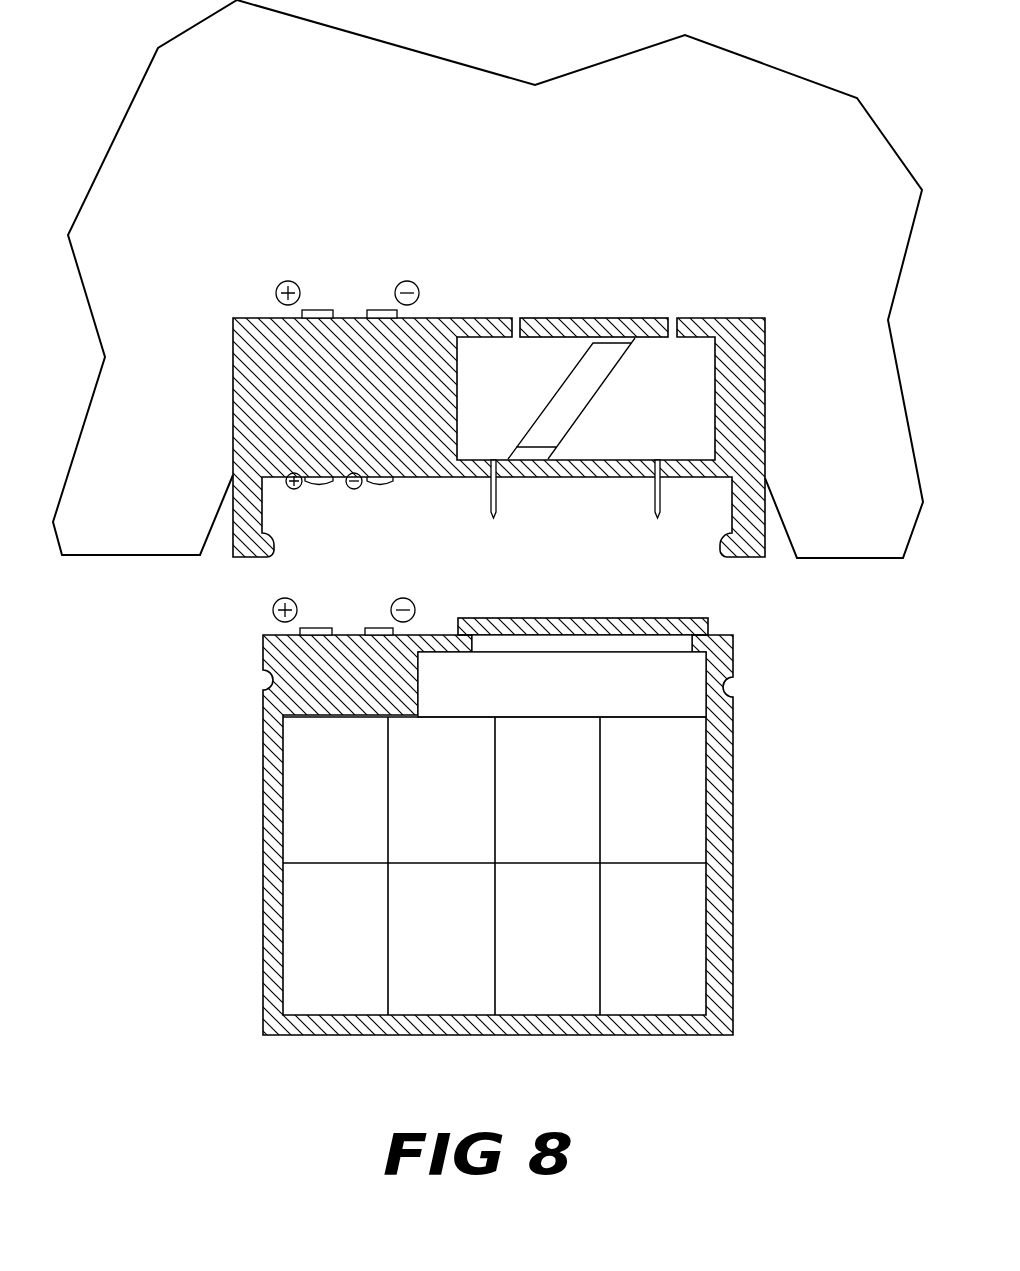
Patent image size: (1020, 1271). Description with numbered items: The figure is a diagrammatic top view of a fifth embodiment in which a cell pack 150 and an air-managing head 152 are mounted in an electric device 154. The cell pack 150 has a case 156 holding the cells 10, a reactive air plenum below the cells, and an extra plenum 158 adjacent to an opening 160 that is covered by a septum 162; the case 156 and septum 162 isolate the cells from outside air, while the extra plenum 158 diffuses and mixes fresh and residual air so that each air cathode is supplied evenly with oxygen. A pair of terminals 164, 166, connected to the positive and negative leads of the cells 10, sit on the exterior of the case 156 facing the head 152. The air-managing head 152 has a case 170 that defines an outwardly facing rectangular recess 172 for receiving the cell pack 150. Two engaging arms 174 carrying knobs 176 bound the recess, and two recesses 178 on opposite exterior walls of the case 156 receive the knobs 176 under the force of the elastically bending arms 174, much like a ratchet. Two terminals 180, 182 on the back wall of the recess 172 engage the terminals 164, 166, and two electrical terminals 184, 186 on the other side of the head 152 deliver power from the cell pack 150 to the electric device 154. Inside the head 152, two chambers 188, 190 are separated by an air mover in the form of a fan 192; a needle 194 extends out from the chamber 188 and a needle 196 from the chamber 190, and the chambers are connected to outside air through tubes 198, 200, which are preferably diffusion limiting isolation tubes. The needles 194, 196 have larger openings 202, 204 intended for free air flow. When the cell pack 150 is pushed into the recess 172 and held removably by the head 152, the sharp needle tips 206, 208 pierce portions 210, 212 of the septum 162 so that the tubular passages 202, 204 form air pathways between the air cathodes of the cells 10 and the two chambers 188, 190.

The cells 10 is at (641, 804).
The cell pack 150 is at (220, 953).
The air-managing head 152 is at (228, 417).
The electric device 154 is at (453, 151).
The case 156 is at (740, 918).
The extra plenum 158 is at (484, 702).
The opening 160 is at (582, 650).
The septum 162 is at (712, 628).
The terminal 164 is at (318, 628).
The terminal 166 is at (380, 628).
The case 170 is at (757, 390).
The rectangular recess 172 is at (419, 526).
The engaging arms 174 is at (245, 560).
The knobs 176 is at (275, 538).
The recesses 178 is at (258, 683).
The terminal 180 is at (317, 486).
The terminal 182 is at (382, 487).
The electrical terminal 184 is at (318, 310).
The electrical terminal 186 is at (382, 310).
The chamber 188 is at (474, 404).
The chamber 190 is at (649, 404).
The fan 192 is at (565, 405).
The needle 194 is at (497, 488).
The needle 196 is at (663, 488).
The tube 198 is at (516, 318).
The tube 200 is at (674, 318).
The opening 202 is at (500, 438).
The opening 204 is at (657, 455).
The needle tip 206 is at (495, 520).
The needle tip 208 is at (656, 520).
The portion of the septum 210 is at (497, 618).
The portion of the septum 212 is at (663, 618).